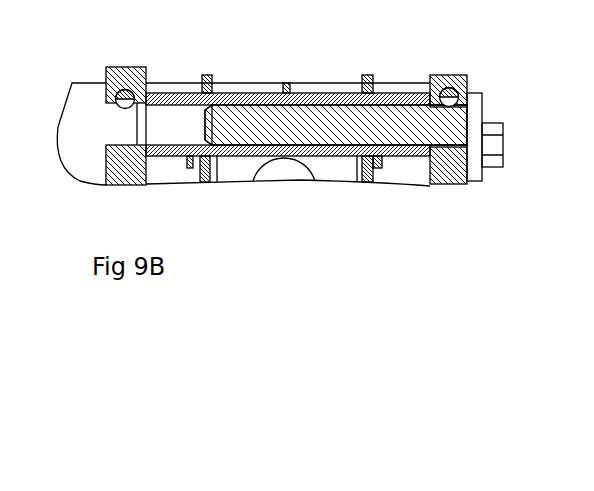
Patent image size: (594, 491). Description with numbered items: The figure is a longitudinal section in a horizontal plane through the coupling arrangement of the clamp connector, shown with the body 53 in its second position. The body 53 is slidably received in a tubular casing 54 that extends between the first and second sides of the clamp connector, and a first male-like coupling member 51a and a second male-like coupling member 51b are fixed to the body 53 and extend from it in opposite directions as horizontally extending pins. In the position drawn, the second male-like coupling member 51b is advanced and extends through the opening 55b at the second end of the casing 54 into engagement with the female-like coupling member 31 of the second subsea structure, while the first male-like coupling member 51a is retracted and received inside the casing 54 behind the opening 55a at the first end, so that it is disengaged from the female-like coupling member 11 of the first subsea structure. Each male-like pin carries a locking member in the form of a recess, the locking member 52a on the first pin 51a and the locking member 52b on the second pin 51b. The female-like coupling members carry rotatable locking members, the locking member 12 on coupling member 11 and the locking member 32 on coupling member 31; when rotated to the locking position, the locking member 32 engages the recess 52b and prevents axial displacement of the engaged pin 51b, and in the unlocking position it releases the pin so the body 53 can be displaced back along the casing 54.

The coupling member 11 is at (128, 148).
The locking member 12 is at (128, 95).
The coupling member 31 is at (450, 148).
The locking member 32 is at (449, 89).
The first male-like coupling member 51a is at (206, 122).
The second male-like coupling member 51b is at (458, 122).
The locking member 52a is at (218, 108).
The locking member 52b is at (468, 104).
The body 53 is at (300, 108).
The tubular casing 54 is at (327, 102).
The opening 55a is at (143, 127).
The opening 55b is at (428, 100).